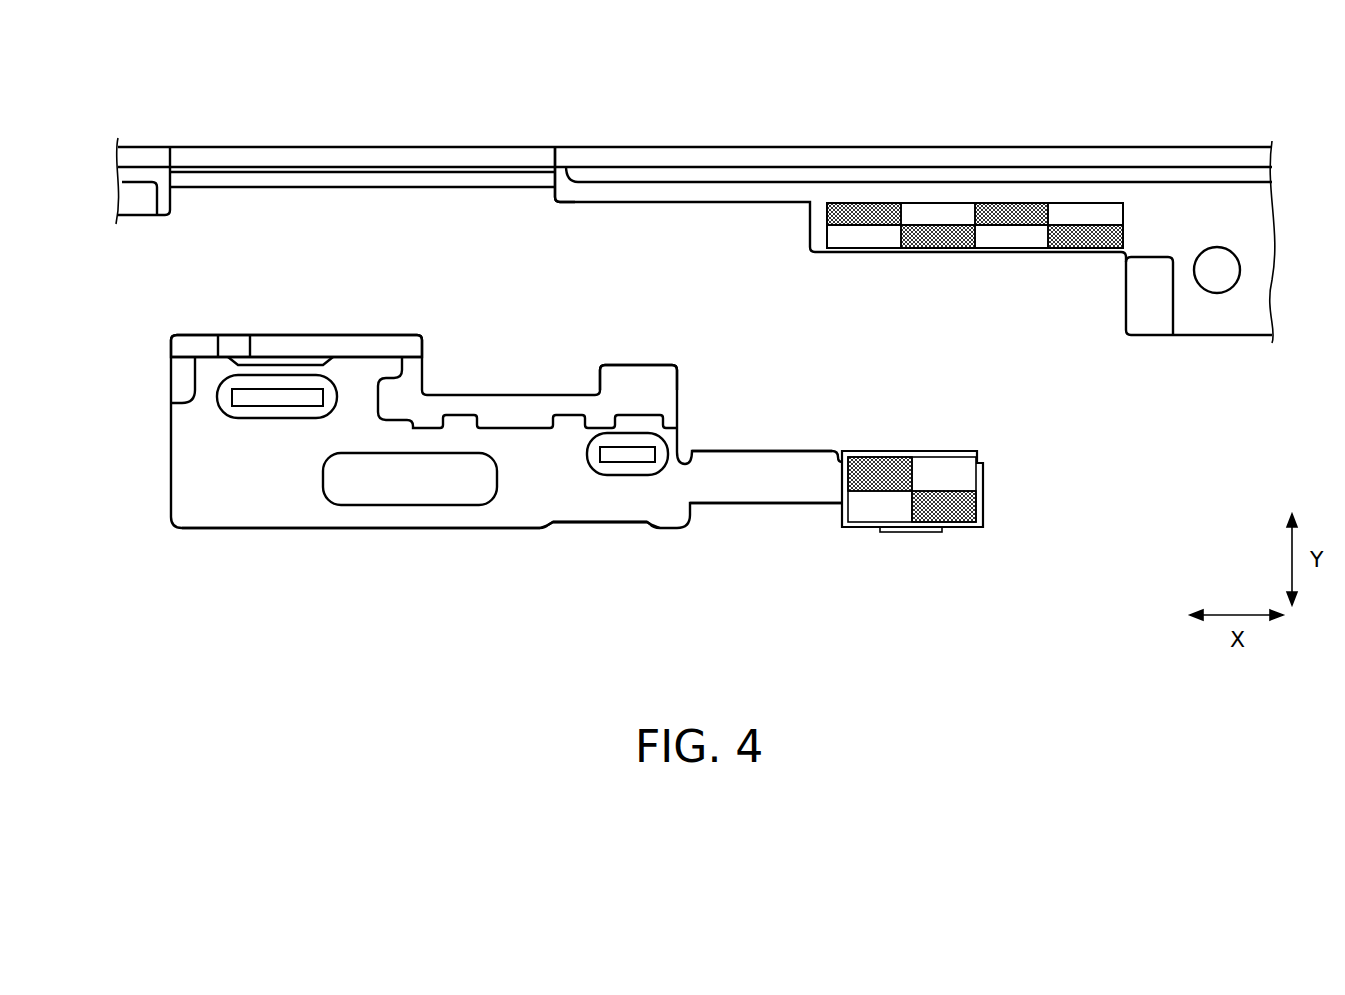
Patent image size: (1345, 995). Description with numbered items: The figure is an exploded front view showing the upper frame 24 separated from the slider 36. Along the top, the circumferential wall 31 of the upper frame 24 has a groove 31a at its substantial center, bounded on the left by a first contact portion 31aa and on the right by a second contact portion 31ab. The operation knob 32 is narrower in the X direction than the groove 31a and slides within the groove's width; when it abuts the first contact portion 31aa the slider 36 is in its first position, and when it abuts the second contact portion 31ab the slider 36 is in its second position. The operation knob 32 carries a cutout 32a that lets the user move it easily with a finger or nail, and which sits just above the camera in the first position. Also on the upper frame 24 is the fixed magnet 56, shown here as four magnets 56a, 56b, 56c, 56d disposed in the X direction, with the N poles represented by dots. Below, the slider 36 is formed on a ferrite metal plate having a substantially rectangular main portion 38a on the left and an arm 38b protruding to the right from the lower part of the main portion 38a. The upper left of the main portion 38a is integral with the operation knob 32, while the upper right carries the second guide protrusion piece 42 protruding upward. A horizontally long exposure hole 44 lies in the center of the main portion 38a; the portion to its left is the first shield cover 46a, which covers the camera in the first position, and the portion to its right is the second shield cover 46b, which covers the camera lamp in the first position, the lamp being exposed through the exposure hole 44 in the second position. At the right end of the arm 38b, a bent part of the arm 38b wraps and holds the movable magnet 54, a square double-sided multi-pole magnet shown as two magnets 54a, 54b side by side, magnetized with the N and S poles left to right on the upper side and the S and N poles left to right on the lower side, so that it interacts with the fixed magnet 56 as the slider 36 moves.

The upper frame 24 is at (1183, 152).
The circumferential wall 31 is at (645, 158).
The groove 31a is at (456, 158).
The first contact portion 31aa is at (173, 177).
The second contact portion 31ab is at (556, 162).
The operation knob 32 is at (362, 348).
The cutout 32a is at (250, 348).
The slider 36 is at (195, 484).
The main portion 38a is at (588, 495).
The arm 38b is at (755, 487).
The second guide protrusion piece 42 is at (617, 378).
The exposure hole 44 is at (393, 497).
The first shield cover 46a is at (300, 515).
The second shield cover 46b is at (540, 495).
The movable magnet 54 is at (917, 561).
The magnet 54a is at (858, 513).
The magnet 54b is at (962, 515).
The fixed magnet 56 is at (977, 139).
The magnet 56a is at (878, 212).
The magnet 56b is at (950, 212).
The magnet 56c is at (1026, 212).
The magnet 56d is at (1102, 212).